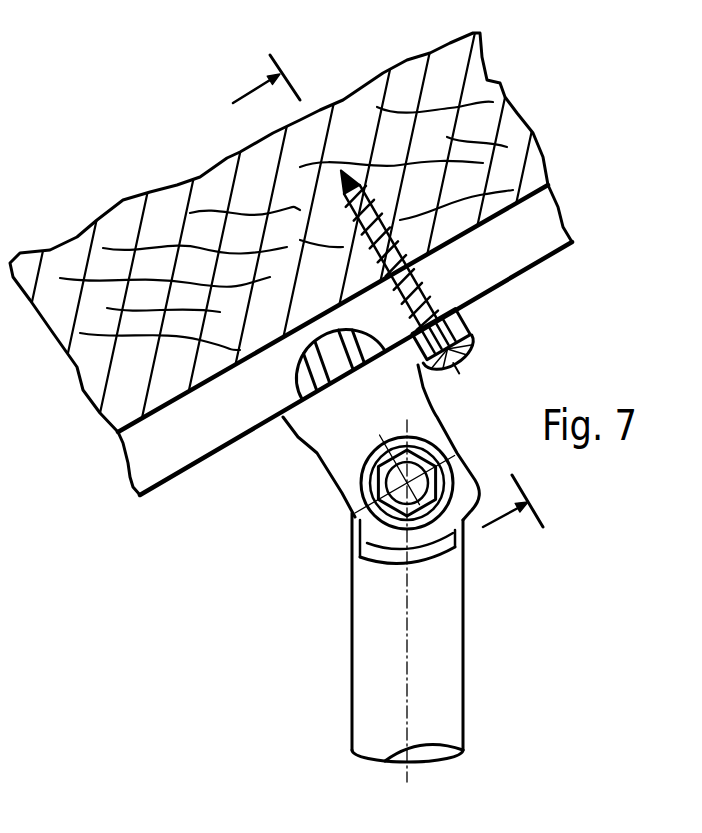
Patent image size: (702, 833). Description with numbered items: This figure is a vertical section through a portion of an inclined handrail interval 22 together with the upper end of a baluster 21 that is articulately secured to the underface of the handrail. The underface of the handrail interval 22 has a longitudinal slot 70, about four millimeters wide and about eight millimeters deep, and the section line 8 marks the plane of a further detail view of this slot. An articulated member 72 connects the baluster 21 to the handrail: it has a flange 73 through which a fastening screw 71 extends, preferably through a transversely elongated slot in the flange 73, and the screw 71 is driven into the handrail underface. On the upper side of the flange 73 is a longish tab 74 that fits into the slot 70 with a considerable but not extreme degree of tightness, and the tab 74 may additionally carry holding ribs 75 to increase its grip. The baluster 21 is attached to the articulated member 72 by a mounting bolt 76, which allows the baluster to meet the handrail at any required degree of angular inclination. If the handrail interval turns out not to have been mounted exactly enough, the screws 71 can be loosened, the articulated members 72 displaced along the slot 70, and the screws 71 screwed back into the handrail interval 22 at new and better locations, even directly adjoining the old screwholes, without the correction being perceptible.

The section line for FIG. 8 is at (396, 290).
The baluster 21 is at (362, 633).
The handrail interval 22 is at (172, 205).
The longitudinal slot 70 is at (525, 248).
The fastening screw 71 is at (470, 353).
The articulated member 72 is at (337, 450).
The flange 73 is at (465, 322).
The tab 74 is at (330, 347).
The holding ribs 75 is at (305, 378).
The mounting bolt 76 is at (365, 500).